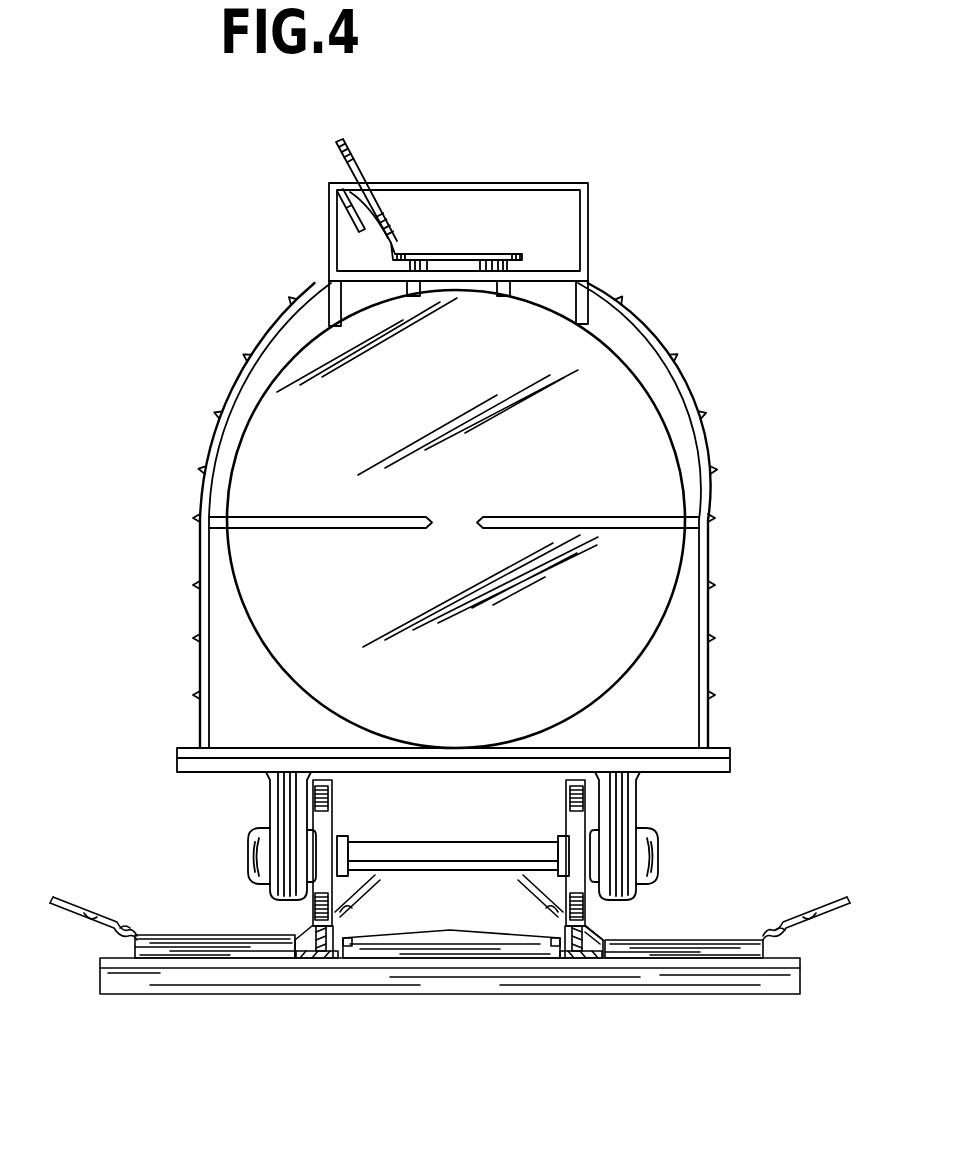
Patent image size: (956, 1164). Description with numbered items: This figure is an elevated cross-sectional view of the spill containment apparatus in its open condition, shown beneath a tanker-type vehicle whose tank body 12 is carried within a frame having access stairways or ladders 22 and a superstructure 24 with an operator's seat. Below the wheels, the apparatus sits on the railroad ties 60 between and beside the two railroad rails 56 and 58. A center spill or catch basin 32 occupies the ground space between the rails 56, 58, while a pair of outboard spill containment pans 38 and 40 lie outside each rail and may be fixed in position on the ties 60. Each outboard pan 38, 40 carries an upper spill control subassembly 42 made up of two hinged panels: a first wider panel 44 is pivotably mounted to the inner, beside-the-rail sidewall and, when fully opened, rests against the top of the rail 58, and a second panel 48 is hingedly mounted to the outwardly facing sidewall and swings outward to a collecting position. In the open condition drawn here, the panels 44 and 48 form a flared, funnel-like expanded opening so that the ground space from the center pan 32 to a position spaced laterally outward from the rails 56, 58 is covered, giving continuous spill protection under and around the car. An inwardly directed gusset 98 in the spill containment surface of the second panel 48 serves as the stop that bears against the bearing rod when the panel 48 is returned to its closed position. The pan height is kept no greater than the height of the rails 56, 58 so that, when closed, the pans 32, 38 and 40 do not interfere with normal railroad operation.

The tanker truck 12 is at (277, 435).
The permanent access stairways or ladders 22 is at (688, 395).
The railroad tank car superstructure 24 is at (436, 178).
The center spill or catch basin 32 is at (513, 948).
The outboard spill containment pan 38 is at (277, 947).
The outboard spill containment pan 40 is at (732, 952).
The upper spill control subassembly 42 is at (62, 908).
The first wider panel 44 is at (585, 928).
The second panel 48 is at (820, 918).
The railroad rail 56 is at (322, 962).
The railroad rail 58 is at (581, 965).
The railroad ties 60 is at (157, 975).
The inwardly directed gusset 98 is at (120, 928).